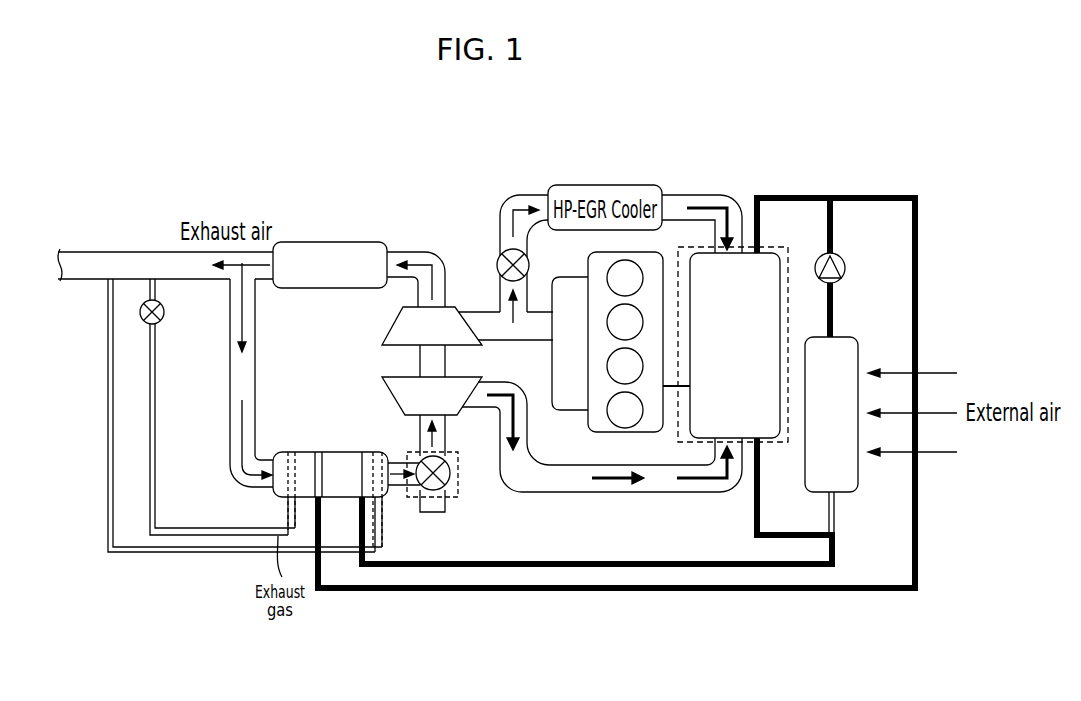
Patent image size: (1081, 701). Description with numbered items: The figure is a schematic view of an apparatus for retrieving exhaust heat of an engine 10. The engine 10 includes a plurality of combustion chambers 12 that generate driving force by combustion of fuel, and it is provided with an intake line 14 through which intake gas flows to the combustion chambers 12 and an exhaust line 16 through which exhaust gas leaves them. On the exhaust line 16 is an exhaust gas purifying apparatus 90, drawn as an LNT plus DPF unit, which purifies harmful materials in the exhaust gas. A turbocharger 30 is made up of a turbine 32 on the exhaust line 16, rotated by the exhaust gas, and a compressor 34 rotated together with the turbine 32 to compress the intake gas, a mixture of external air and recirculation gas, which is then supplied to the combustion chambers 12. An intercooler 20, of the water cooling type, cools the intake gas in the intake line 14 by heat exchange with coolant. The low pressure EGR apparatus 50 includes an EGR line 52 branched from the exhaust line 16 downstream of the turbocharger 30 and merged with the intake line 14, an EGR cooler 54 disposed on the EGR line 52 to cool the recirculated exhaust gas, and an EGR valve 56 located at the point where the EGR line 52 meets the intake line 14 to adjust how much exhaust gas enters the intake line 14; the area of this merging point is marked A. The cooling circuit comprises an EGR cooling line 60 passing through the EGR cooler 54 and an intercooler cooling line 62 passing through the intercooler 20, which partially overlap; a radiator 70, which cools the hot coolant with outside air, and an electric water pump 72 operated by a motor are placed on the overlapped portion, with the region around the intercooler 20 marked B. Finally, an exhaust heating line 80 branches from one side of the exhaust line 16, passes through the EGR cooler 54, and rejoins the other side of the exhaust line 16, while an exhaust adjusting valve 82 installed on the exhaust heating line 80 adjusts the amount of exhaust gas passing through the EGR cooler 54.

The engine 10 is at (621, 457).
The combustion chamber 12 is at (638, 422).
The intake line 14 is at (540, 492).
The exhaust line 16 is at (480, 307).
The intercooler 20 is at (688, 253).
The turbocharger 30 is at (383, 361).
The turbine 32 is at (395, 323).
The compressor 34 is at (402, 396).
The EGR apparatus 50 is at (296, 483).
The EGR line 52 is at (228, 443).
The EGR cooler 54 is at (275, 497).
The EGR valve 56 is at (402, 492).
The EGR cooling line 60 is at (669, 388).
The intercooler cooling line 62 is at (753, 207).
The radiator 70 is at (857, 337).
The electric water pump 72 is at (841, 255).
The exhaust heating line 80 is at (211, 415).
The exhaust adjusting valve 82 is at (165, 312).
The exhaust gas purifying apparatus 90 is at (330, 242).
The region A is at (407, 507).
The region B is at (789, 301).